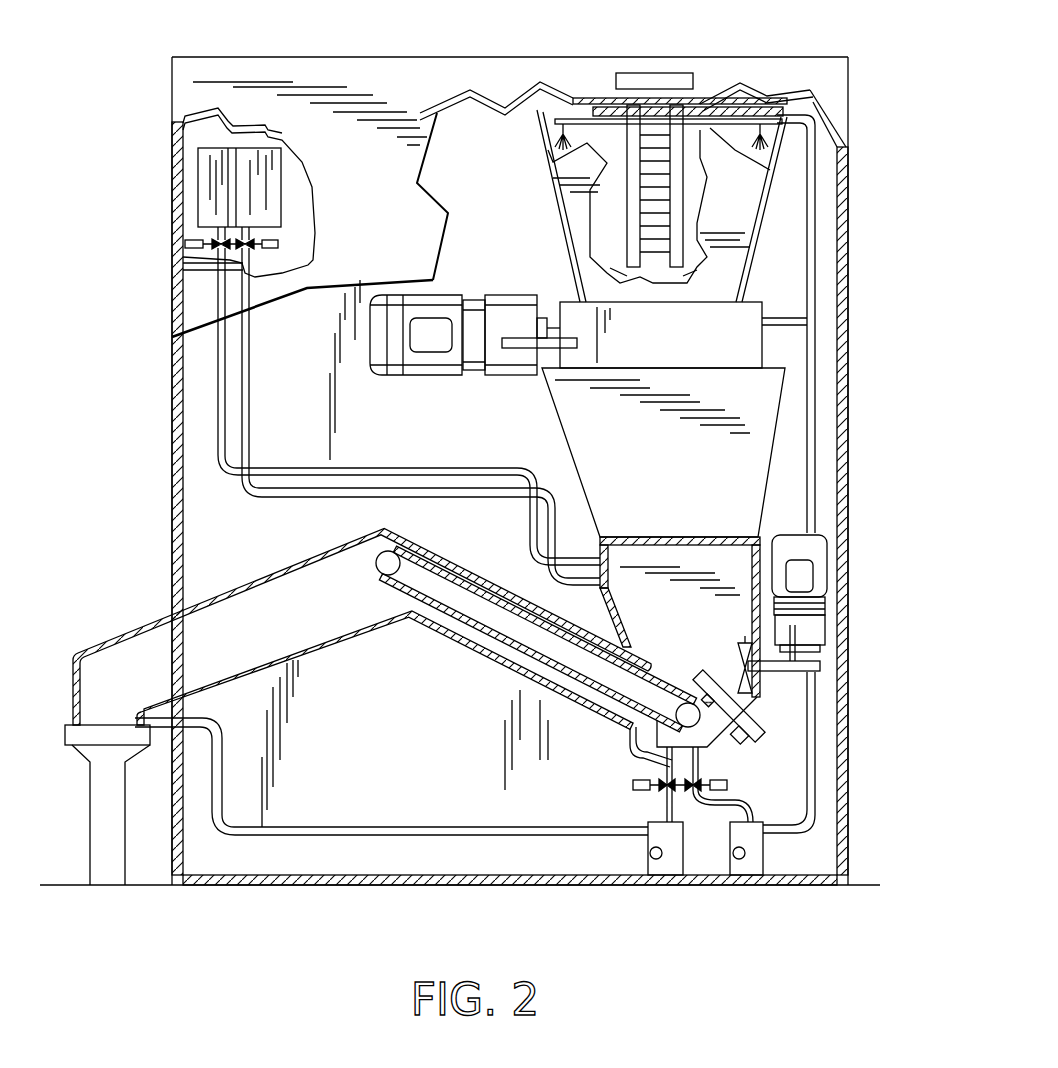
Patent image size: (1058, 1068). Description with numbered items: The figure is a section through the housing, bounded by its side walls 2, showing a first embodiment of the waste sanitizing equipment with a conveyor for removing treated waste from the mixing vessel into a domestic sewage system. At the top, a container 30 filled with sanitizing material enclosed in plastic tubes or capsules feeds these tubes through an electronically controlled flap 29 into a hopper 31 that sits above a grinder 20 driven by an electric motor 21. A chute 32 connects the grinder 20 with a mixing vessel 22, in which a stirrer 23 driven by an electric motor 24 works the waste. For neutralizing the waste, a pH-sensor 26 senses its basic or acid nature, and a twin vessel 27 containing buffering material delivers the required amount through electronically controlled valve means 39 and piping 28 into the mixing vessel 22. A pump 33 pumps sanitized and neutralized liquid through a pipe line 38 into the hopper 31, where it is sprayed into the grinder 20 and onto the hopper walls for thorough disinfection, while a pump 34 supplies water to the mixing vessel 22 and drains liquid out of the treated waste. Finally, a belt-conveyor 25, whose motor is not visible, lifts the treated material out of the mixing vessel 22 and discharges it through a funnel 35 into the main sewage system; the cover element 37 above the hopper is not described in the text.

The side wall 2 is at (190, 418).
The grinder 20 is at (757, 345).
The electric motor 21 is at (430, 350).
The mixing vessel 22 is at (740, 553).
The stirrer 23 is at (743, 650).
The electric motor 24 is at (808, 570).
The belt-conveyor 25 is at (520, 660).
The pH-sensor 26 is at (757, 735).
The twin vessel 27 is at (200, 180).
The piping 28 is at (247, 368).
The electronically controlled flap 29 is at (693, 277).
The container 30 is at (650, 132).
The hopper 31 is at (748, 210).
The chute 32 is at (570, 422).
The pump 33 is at (760, 878).
The pump 34 is at (678, 878).
The funnel 35 is at (155, 640).
The cover 37 is at (787, 116).
The pipe line 38 is at (805, 178).
The electronically controlled valve means 39 is at (208, 248).